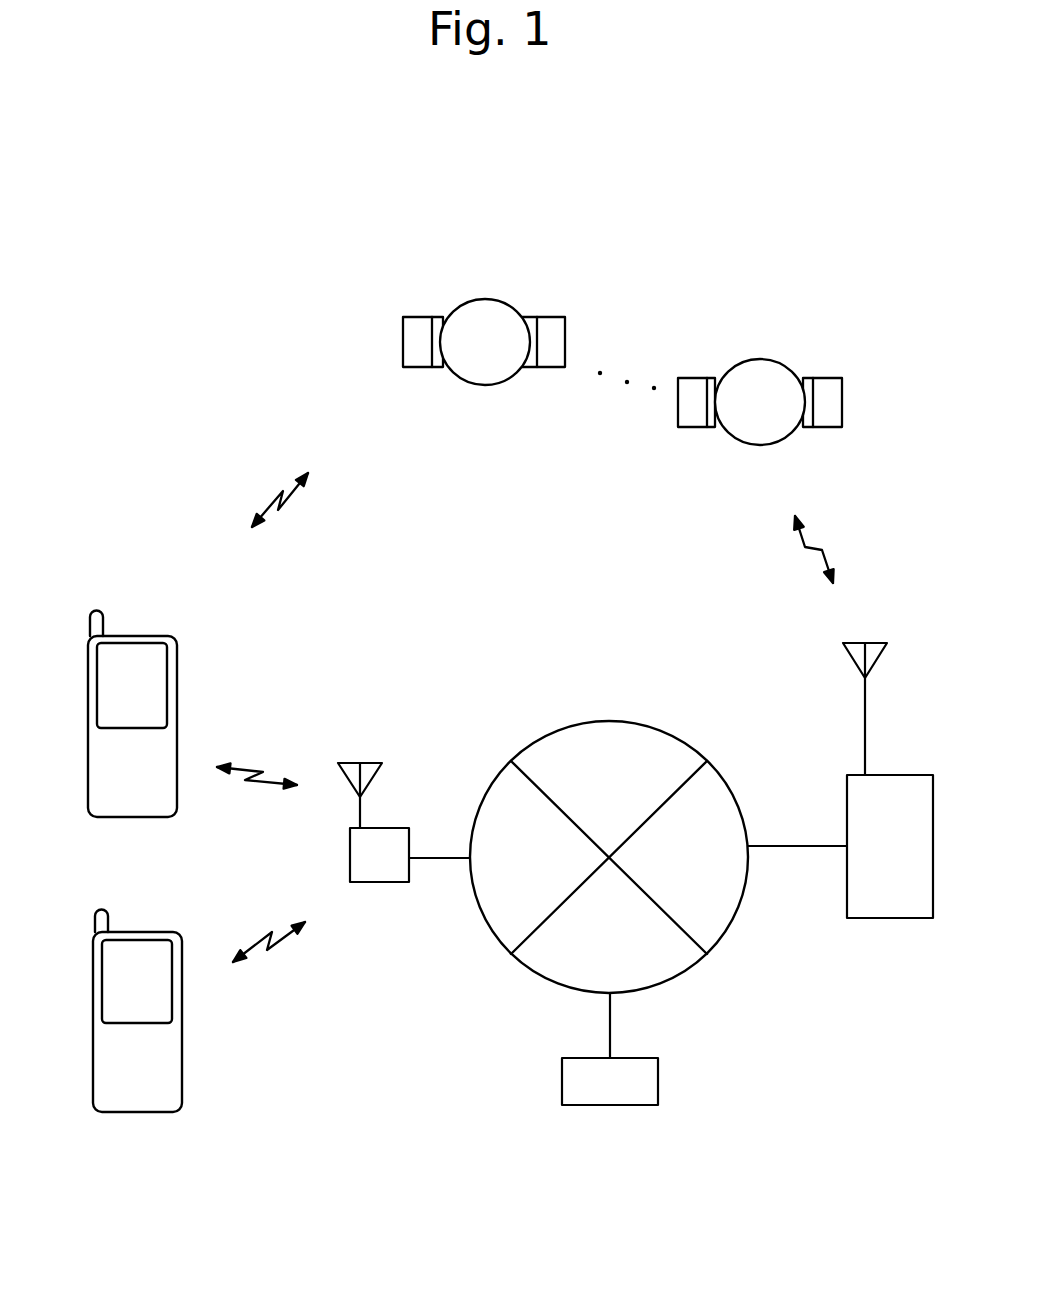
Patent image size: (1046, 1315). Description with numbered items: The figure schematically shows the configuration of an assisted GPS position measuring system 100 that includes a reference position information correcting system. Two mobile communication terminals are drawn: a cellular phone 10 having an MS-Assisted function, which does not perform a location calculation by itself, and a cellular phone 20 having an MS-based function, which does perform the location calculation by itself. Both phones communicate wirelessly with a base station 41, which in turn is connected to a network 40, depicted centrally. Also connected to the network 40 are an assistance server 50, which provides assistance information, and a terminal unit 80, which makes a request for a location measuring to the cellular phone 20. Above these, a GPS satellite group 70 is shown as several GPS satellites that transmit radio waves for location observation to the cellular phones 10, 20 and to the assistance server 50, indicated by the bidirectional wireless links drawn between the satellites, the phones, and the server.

The assisted GPS position measuring system 100 is at (560, 171).
The GPS satellite group 70 is at (608, 290).
The cellular phone 10 is at (142, 817).
The cellular phone 20 is at (147, 1112).
The network 40 is at (628, 722).
The base station 41 is at (373, 882).
The assistance server 50 is at (890, 775).
The terminal unit 80 is at (658, 1078).